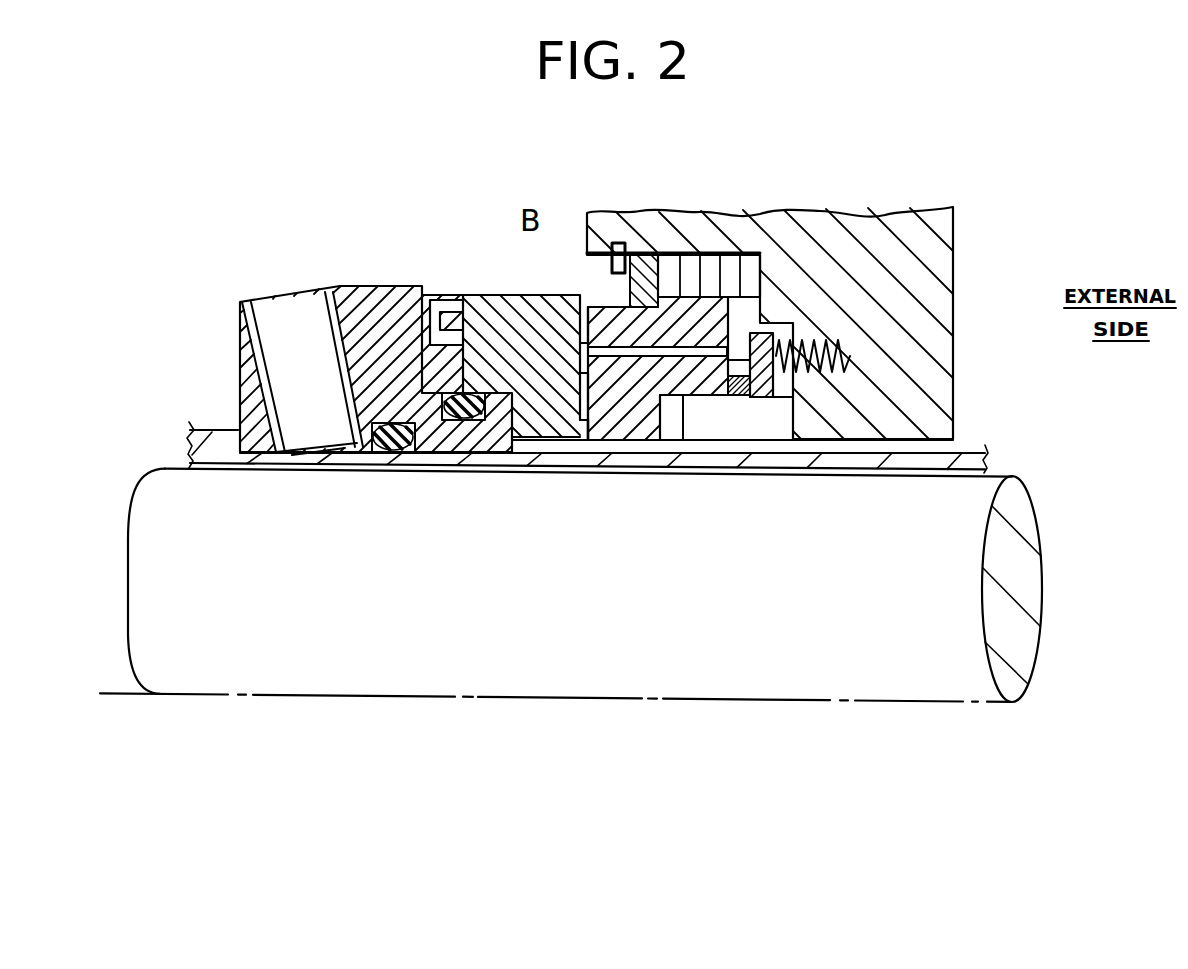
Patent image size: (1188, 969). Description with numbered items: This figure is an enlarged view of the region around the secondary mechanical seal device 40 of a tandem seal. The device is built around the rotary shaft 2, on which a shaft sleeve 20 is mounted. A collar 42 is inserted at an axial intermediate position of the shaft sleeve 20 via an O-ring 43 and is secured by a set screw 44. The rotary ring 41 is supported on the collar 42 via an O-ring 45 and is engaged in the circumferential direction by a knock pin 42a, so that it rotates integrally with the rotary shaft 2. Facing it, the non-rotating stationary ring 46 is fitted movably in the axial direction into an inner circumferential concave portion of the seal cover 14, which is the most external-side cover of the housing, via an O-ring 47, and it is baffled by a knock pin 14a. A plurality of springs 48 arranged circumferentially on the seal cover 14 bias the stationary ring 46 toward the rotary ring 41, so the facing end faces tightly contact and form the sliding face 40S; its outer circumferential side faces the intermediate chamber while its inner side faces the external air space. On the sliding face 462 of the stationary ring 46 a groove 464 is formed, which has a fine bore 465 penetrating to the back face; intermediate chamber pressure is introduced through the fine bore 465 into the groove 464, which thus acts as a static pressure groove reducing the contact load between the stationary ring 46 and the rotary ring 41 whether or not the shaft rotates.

The rotary shaft 2 is at (955, 581).
The seal cover 14 is at (907, 267).
The knock pin 14a is at (750, 272).
The shaft sleeve 20 is at (963, 455).
The secondary mechanical seal device 40 is at (536, 277).
The sliding face 40S is at (585, 440).
The rotary ring 41 is at (547, 418).
The collar 42 is at (440, 425).
The knock pin 42a is at (432, 295).
The O-ring 43 is at (395, 447).
The set screw 44 is at (323, 418).
The O-ring 45 is at (470, 417).
The stationary ring 46 is at (700, 397).
The sliding face 462 is at (598, 345).
The groove 464 is at (588, 362).
The fine bore 465 is at (673, 430).
The O-ring 47 is at (741, 396).
The spring 48 is at (825, 375).